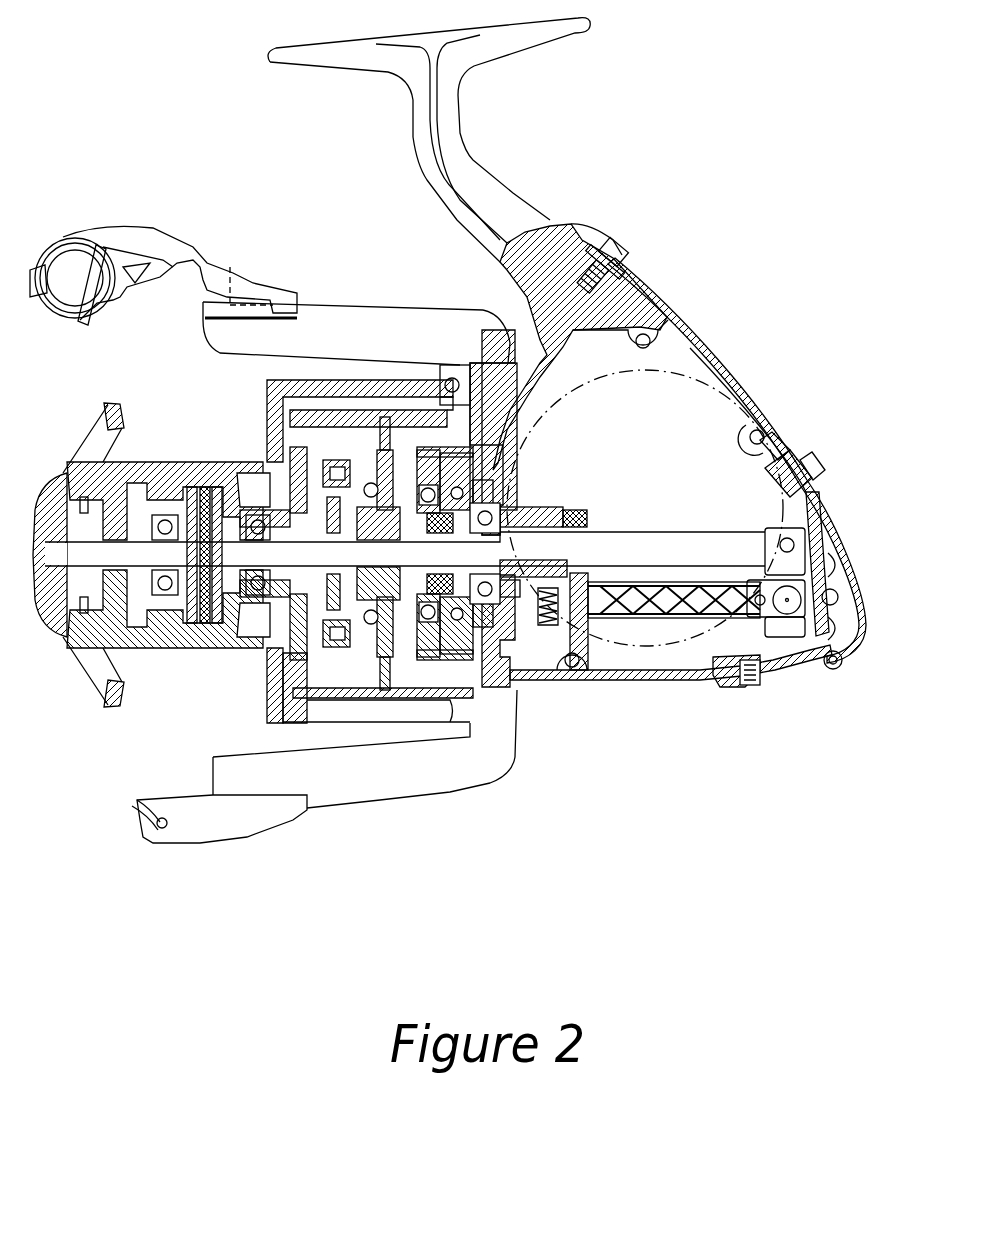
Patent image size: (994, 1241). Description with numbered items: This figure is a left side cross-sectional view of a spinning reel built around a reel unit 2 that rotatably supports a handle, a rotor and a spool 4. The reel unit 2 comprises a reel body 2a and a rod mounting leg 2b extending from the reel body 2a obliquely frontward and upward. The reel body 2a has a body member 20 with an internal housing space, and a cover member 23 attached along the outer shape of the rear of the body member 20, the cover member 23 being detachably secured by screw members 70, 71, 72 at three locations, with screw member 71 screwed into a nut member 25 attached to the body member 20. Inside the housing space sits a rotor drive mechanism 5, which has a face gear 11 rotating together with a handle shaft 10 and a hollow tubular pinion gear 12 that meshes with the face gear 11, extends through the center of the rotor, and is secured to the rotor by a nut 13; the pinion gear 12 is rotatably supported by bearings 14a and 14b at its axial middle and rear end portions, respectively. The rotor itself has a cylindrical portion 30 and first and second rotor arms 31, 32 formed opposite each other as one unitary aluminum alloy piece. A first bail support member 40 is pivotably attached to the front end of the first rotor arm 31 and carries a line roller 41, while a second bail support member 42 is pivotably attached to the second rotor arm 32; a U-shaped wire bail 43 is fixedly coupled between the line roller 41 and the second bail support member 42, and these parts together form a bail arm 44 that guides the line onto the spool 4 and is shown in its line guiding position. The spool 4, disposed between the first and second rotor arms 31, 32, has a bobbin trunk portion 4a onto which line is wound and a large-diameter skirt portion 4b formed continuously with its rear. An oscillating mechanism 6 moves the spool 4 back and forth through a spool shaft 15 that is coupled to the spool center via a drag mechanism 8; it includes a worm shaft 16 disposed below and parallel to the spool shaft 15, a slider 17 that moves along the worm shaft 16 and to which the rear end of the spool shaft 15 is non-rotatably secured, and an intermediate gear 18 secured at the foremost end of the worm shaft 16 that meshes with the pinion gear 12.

The reel unit 2 is at (562, 166).
The reel body 2a is at (565, 229).
The rod mounting leg 2b is at (466, 145).
The spool 4 is at (162, 672).
The bobbin trunk portion 4a is at (173, 470).
The skirt portion 4b is at (333, 383).
The rotor drive mechanism 5 is at (522, 505).
The oscillating mechanism 6 is at (775, 668).
The drag mechanism 8 is at (200, 642).
The handle shaft 10 is at (800, 477).
The face gear 11 is at (712, 338).
The pinion gear 12 is at (534, 463).
The nut 13 is at (350, 592).
The bearing 14a is at (512, 657).
The bearing 14b is at (588, 680).
The spool shaft 15 is at (633, 556).
The worm shaft 16 is at (697, 625).
The slider 17 is at (850, 612).
The intermediate gear 18 is at (545, 627).
The body member 20 is at (838, 662).
The cover member 23 is at (850, 560).
The nut member 25 is at (762, 440).
The cylindrical portion 30 is at (323, 693).
The first rotor arm 31 is at (358, 328).
The second rotor arm 32 is at (440, 785).
The first bail support member 40 is at (185, 240).
The line roller 41 is at (77, 238).
The second bail support member 42 is at (197, 840).
The bail 43 is at (137, 800).
The bail arm 44 is at (68, 328).
The screw member 70 is at (608, 268).
The screw member 71 is at (808, 462).
The screw member 72 is at (758, 692).